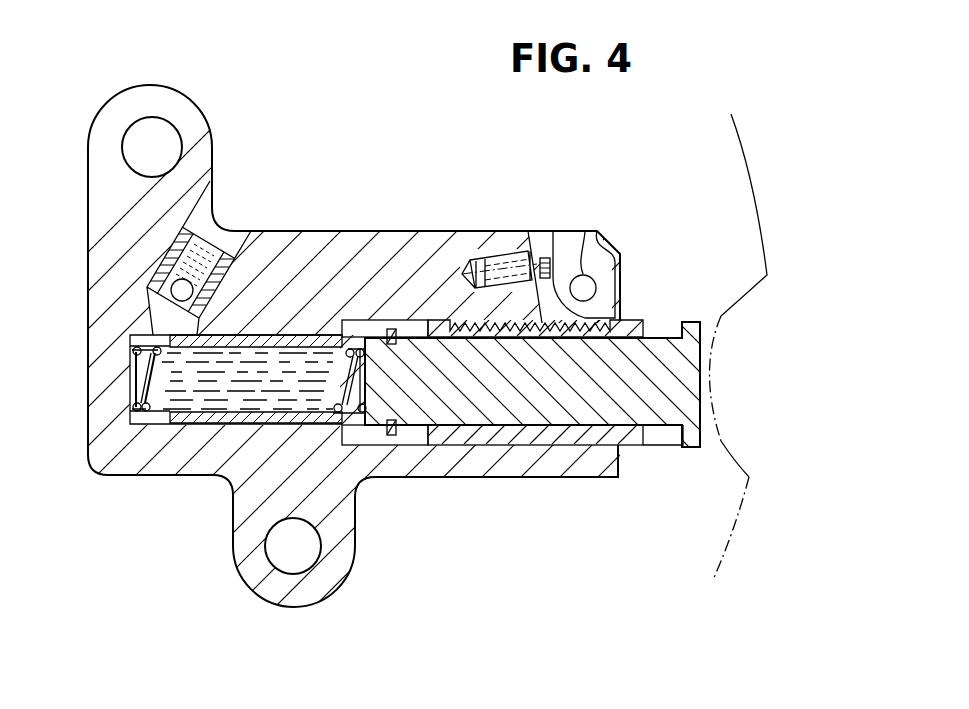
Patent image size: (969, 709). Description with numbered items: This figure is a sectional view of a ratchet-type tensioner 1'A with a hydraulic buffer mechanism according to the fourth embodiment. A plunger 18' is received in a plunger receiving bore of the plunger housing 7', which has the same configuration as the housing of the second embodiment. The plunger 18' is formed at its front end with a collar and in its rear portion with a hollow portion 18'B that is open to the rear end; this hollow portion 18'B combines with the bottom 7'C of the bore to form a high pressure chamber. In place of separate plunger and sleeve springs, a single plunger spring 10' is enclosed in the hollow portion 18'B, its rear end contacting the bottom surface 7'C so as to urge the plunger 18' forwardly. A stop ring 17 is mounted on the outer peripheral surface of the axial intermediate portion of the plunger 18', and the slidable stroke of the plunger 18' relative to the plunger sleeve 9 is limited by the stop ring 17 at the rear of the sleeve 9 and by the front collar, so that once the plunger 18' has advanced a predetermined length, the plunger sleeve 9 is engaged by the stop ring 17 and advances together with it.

The tensioner 1'A is at (415, 346).
The plunger housing 7' is at (354, 346).
The bottom surface 7'C is at (100, 374).
The plunger sleeve 9 is at (512, 440).
The plunger spring 10' is at (124, 444).
The stop ring 17 is at (398, 432).
The plunger 18' is at (566, 432).
The hollow portion 18'B is at (246, 438).